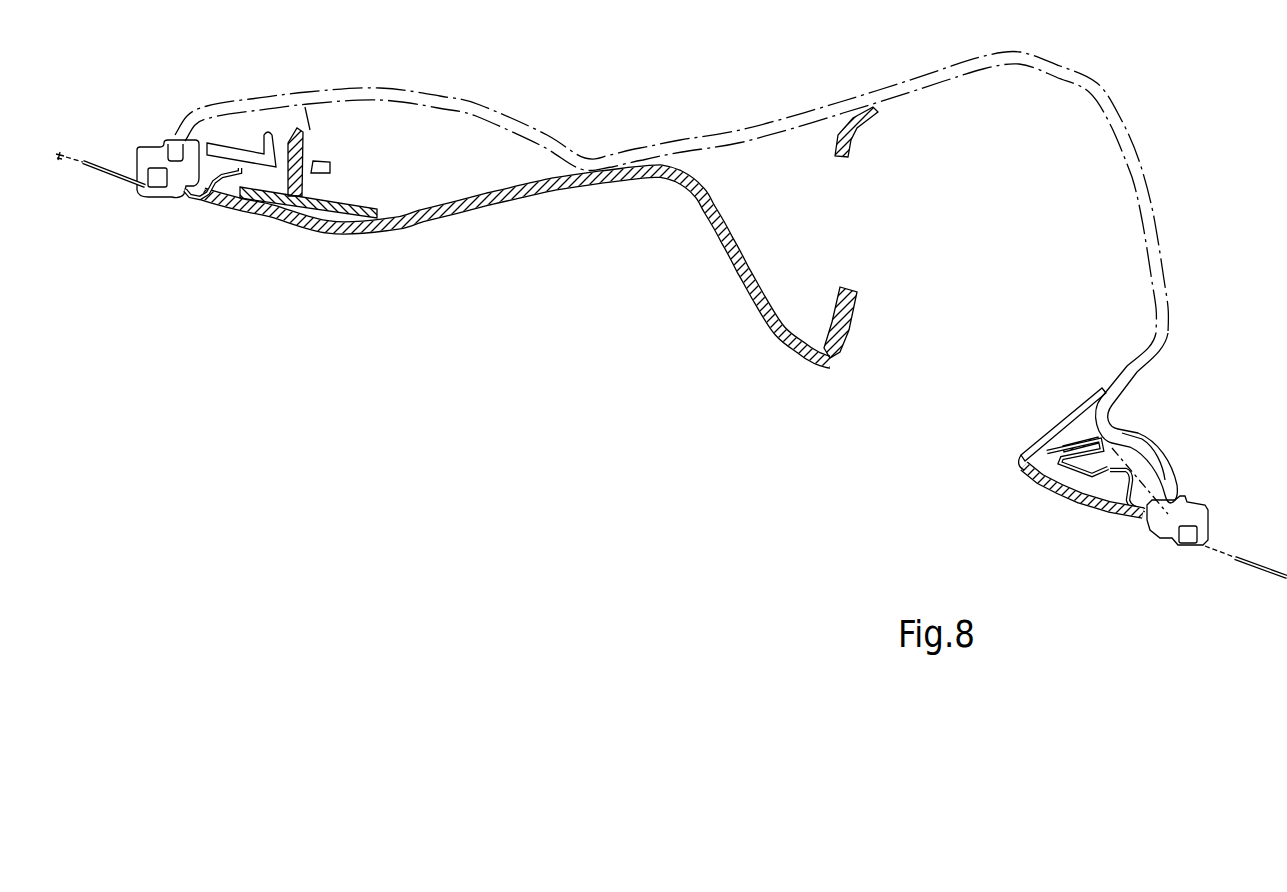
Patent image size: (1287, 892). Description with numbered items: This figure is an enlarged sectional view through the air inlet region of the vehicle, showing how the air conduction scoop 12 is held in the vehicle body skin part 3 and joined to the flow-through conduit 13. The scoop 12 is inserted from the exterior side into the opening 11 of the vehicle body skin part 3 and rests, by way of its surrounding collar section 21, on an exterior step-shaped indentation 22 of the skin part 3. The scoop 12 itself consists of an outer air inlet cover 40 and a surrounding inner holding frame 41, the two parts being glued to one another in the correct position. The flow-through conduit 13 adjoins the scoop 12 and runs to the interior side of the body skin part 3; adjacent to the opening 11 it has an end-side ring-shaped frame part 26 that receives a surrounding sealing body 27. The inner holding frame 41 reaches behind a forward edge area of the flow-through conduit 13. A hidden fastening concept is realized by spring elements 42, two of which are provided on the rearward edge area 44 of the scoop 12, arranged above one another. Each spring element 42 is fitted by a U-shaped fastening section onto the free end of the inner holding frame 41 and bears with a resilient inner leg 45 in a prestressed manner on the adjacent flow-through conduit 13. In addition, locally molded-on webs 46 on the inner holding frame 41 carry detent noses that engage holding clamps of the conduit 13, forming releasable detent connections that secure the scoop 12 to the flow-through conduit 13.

The vehicle body skin part 3 is at (82, 169).
The opening 11 is at (603, 248).
The air conduction scoop 12 is at (332, 237).
The flow-through conduit 13 is at (419, 88).
The collar section 21 is at (207, 194).
The exterior step-shaped indentation 22 is at (197, 138).
The end-side ring-shaped frame part 26 is at (240, 143).
The sealing body 27 is at (148, 180).
The outer air inlet cover 40 is at (450, 216).
The inner holding frame 41 is at (360, 207).
The spring element 42 is at (1108, 440).
The rearward edge area 44 is at (1086, 433).
The resilient inner leg 45 is at (1100, 466).
The web 46 is at (302, 152).